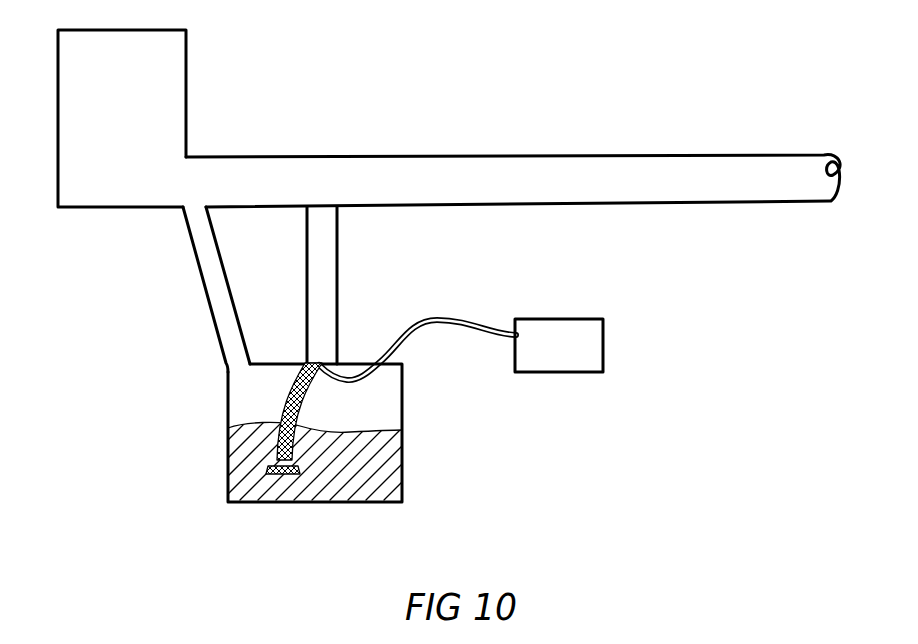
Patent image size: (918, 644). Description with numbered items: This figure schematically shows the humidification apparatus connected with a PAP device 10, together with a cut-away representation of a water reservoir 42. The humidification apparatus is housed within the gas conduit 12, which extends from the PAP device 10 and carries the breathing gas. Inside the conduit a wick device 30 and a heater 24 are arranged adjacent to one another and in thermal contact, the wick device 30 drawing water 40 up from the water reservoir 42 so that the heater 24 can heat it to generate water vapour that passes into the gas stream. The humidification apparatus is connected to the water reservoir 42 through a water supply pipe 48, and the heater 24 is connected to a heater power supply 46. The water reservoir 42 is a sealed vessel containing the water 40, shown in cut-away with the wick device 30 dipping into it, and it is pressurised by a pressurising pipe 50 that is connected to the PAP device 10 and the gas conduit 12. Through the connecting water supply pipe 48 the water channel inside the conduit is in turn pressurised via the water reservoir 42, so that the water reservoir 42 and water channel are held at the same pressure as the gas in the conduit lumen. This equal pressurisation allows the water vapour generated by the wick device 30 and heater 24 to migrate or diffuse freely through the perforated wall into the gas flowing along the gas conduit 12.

The PAP device 10 is at (122, 118).
The gas conduit 12 is at (559, 137).
The heater 24 is at (432, 315).
The wick device 30 is at (306, 405).
The water 40 is at (317, 450).
The water reservoir 42 is at (407, 461).
The heater power supply 46 is at (559, 345).
The water supply pipe 48 is at (340, 245).
The pressurising pipe 50 is at (205, 292).